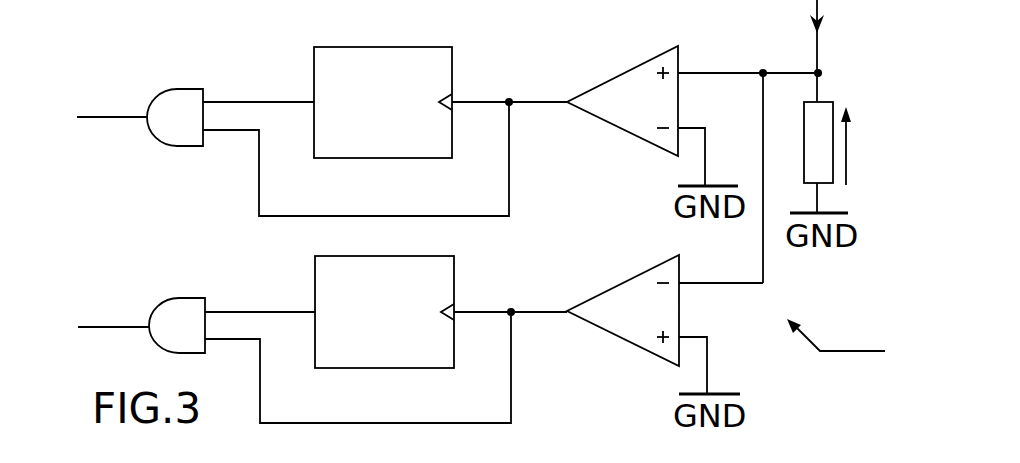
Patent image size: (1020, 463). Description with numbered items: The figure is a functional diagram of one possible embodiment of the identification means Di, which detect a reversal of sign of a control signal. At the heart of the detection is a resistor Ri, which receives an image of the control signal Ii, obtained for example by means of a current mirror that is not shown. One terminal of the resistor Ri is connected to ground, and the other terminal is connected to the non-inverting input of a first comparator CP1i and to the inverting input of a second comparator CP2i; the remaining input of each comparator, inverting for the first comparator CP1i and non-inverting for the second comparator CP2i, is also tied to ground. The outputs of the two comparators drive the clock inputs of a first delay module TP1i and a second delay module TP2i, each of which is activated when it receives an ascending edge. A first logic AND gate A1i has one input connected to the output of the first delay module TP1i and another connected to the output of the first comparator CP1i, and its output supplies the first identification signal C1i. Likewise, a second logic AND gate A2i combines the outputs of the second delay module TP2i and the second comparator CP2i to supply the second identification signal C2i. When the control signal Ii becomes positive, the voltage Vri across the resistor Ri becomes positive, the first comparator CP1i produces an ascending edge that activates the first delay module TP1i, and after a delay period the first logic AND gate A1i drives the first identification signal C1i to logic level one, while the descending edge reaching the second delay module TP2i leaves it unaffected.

The first identification signal C1i is at (112, 97).
The first logic AND gate A1i is at (175, 89).
The first delay module TP1i is at (383, 102).
The first comparator CP1i is at (637, 63).
The control signal Ii is at (831, 51).
The resistor Ri is at (804, 165).
The voltage on the terminals of the resistor Vri is at (869, 146).
The second identification signal C2i is at (113, 308).
The second logic AND gate A2i is at (178, 298).
The second delay module TP2i is at (384, 312).
The second comparator CP2i is at (638, 273).
The identification means Di is at (836, 328).